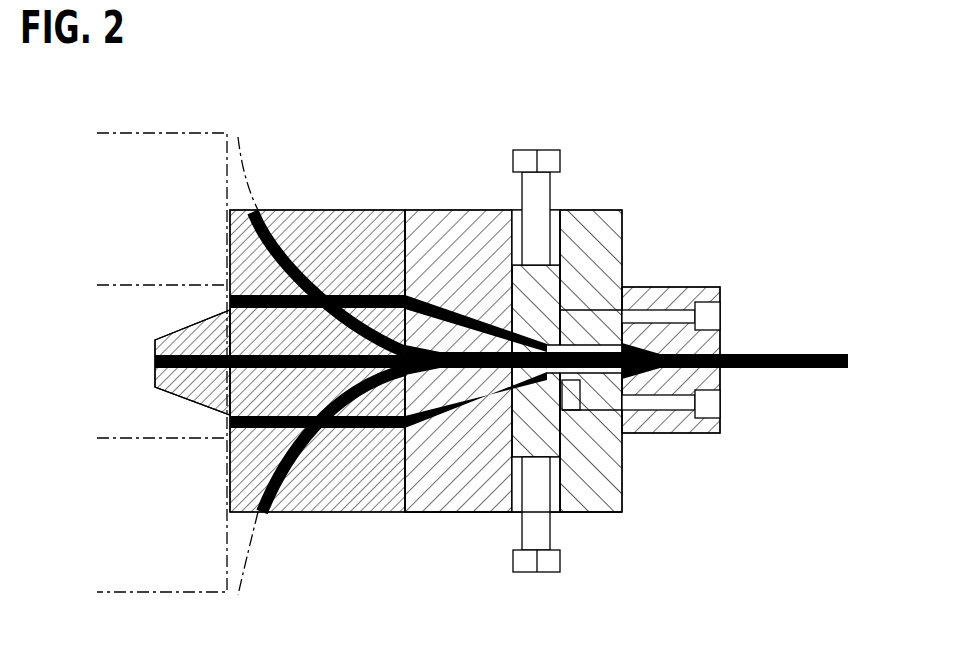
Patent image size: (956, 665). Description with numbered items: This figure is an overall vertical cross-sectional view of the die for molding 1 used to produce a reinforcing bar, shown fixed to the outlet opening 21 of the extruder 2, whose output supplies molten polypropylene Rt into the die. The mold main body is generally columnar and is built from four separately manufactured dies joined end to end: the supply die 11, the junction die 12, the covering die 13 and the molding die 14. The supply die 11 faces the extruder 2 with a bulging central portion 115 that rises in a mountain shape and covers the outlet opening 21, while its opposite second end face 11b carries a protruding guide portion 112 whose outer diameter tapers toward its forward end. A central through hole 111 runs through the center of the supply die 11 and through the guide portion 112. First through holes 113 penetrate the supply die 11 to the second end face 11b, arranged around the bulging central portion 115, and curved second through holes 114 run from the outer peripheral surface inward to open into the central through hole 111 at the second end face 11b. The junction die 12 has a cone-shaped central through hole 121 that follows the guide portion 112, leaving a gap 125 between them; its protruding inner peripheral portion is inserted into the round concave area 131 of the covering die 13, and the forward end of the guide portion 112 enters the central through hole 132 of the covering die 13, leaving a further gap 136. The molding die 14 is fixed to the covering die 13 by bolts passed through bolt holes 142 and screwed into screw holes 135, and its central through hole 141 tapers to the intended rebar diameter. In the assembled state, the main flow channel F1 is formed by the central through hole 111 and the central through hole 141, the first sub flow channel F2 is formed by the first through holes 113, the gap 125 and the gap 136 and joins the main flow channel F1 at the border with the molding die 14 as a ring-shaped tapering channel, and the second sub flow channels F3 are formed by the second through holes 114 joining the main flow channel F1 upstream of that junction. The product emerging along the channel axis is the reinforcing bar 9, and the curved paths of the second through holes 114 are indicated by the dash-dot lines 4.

The die for molding 1 is at (440, 514).
The extruder 2 is at (160, 133).
The resin flow / extruder outlet 4 is at (247, 172).
The electric wire core 9 is at (783, 352).
The supply die 11 is at (338, 223).
The second end face 11b is at (420, 480).
The junction die 12 is at (467, 230).
The covering die 13 is at (608, 233).
The molding die 14 is at (683, 295).
The outlet opening 21 is at (186, 300).
The polypropylene Rt is at (120, 333).
The central through hole 111 is at (272, 490).
The guide portion 112 is at (484, 408).
The first through holes 113 is at (367, 293).
The second through holes 114 is at (278, 243).
The bulging central portion 115 is at (192, 390).
The central through hole 121 is at (455, 442).
The gap 125 is at (426, 312).
The round concave area 131 is at (558, 460).
The central through hole 132 is at (618, 422).
The screw holes 135 is at (578, 427).
The gap 136 is at (598, 418).
The central through hole 141 is at (690, 432).
The bolt holes 142 is at (660, 432).
The main flow channel F1 is at (504, 325).
The first sub flow channel F2 is at (508, 320).
The second sub flow channels F3 is at (302, 247).